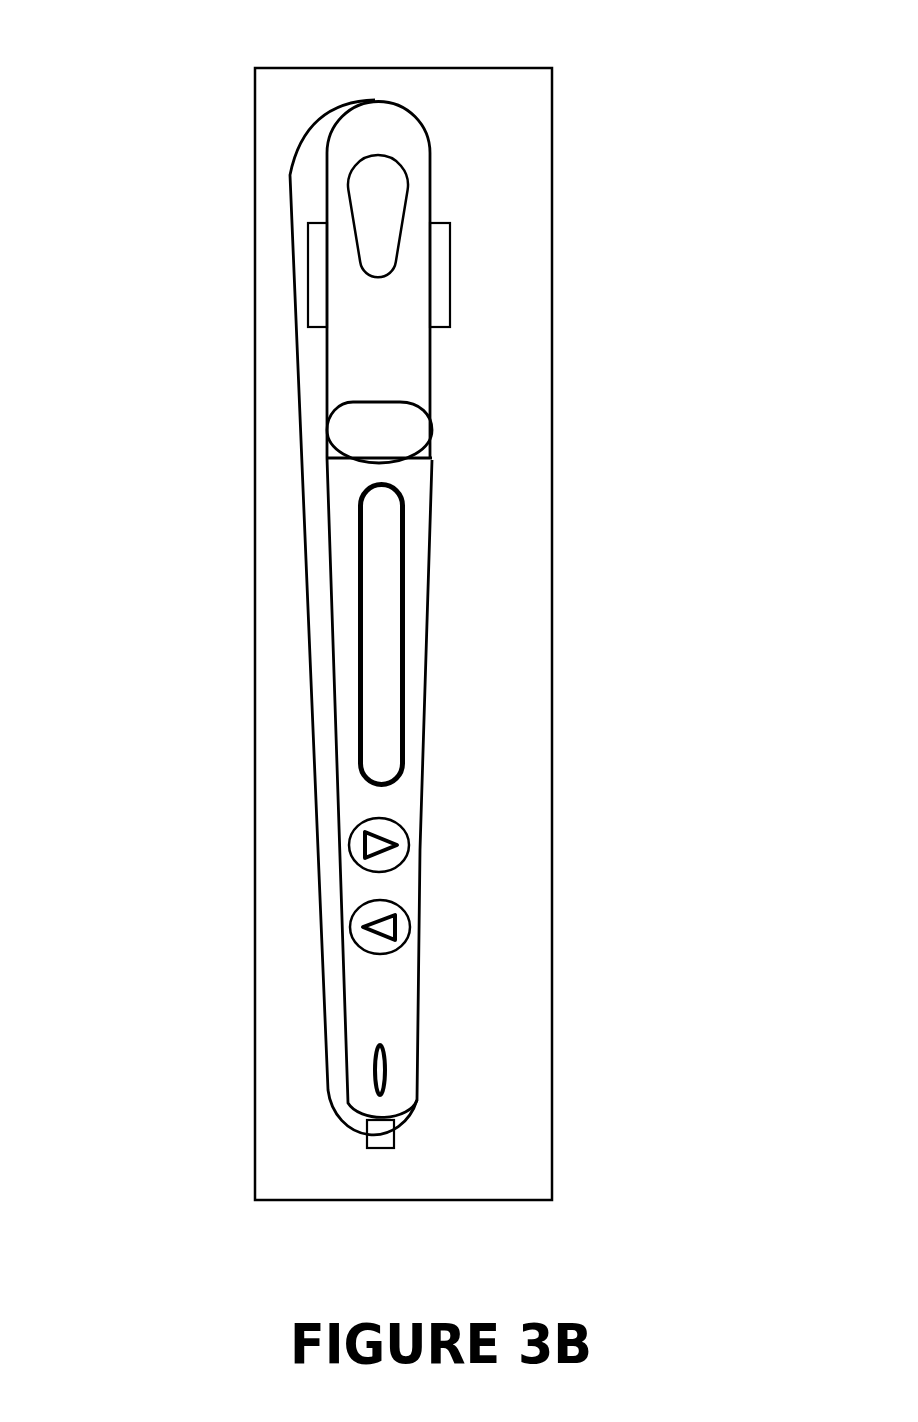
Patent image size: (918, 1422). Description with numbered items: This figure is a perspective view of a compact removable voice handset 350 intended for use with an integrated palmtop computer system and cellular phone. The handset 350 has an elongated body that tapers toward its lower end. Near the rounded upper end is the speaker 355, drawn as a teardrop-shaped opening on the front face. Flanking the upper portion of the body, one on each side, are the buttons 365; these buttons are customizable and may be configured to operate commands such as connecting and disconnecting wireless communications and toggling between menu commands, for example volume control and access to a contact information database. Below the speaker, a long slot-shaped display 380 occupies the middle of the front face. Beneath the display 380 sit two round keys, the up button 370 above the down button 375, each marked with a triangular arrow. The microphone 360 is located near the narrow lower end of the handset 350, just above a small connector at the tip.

The compact removable voice handset 350 is at (62, 26).
The speaker 355 is at (408, 198).
The microphone 360 is at (387, 1068).
The buttons 365 is at (308, 275).
The up button 370 is at (408, 847).
The down button 375 is at (418, 917).
The display 380 is at (427, 628).